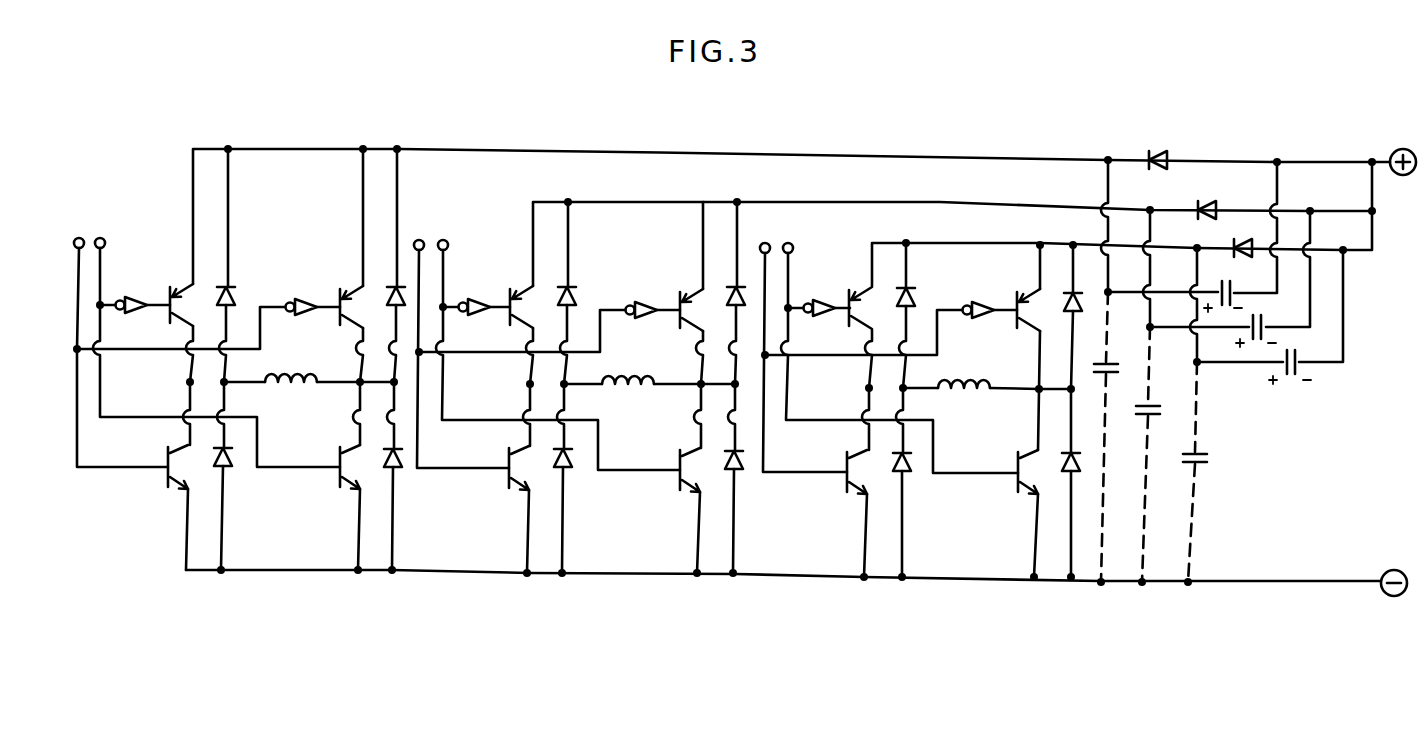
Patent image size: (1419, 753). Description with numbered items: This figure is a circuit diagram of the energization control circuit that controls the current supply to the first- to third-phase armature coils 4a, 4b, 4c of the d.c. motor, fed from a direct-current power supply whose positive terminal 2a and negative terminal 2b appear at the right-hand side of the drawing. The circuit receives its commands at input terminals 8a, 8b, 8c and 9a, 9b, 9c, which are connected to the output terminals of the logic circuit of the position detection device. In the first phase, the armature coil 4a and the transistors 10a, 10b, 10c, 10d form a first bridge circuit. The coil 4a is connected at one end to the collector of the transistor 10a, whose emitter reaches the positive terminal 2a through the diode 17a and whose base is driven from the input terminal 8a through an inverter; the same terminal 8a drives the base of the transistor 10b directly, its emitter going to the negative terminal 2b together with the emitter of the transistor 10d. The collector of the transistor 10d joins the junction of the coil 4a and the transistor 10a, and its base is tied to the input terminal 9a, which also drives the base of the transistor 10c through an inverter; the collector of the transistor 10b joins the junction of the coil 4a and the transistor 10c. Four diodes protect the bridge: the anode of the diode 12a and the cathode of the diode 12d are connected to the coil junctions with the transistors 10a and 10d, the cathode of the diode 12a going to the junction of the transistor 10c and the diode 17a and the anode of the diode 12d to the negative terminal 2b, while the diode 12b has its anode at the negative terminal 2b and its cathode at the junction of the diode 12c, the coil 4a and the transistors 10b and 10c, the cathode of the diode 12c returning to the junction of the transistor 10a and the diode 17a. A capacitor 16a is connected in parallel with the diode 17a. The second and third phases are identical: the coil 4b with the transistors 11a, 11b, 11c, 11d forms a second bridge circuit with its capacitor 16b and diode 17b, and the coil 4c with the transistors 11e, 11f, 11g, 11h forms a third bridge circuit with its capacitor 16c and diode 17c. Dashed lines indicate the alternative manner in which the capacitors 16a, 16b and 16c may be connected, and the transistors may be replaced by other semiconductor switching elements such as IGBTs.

The positive terminal 2a is at (1403, 148).
The negative terminal 2b is at (1394, 597).
The first-phase armature coil 4a is at (282, 395).
The second-phase armature coil 4b is at (628, 392).
The third-phase armature coil 4c is at (960, 393).
The input terminal 8a is at (100, 238).
The input terminal 8b is at (443, 240).
The input terminal 8c is at (788, 243).
The input terminal 9a is at (79, 238).
The input terminal 9b is at (419, 240).
The input terminal 9c is at (765, 243).
The transistor 10a is at (190, 291).
The transistor 10b is at (345, 492).
The transistor 10c is at (362, 288).
The transistor 10d is at (172, 486).
The transistor 11a is at (532, 296).
The transistor 11b is at (685, 487).
The transistor 11c is at (703, 297).
The transistor 11d is at (515, 487).
The transistor 11e is at (868, 297).
The transistor 11f is at (1022, 489).
The transistor 11g is at (1038, 300).
The transistor 11h is at (853, 489).
The diode 12a is at (227, 286).
The diode 12b is at (394, 476).
The diode 12c is at (397, 286).
The diode 12d is at (224, 476).
The capacitor 16a is at (1226, 305).
The capacitor 16b is at (1257, 340).
The capacitor 16c is at (1292, 376).
The diode 17a is at (1158, 150).
The diode 17b is at (1207, 200).
The diode 17c is at (1243, 238).